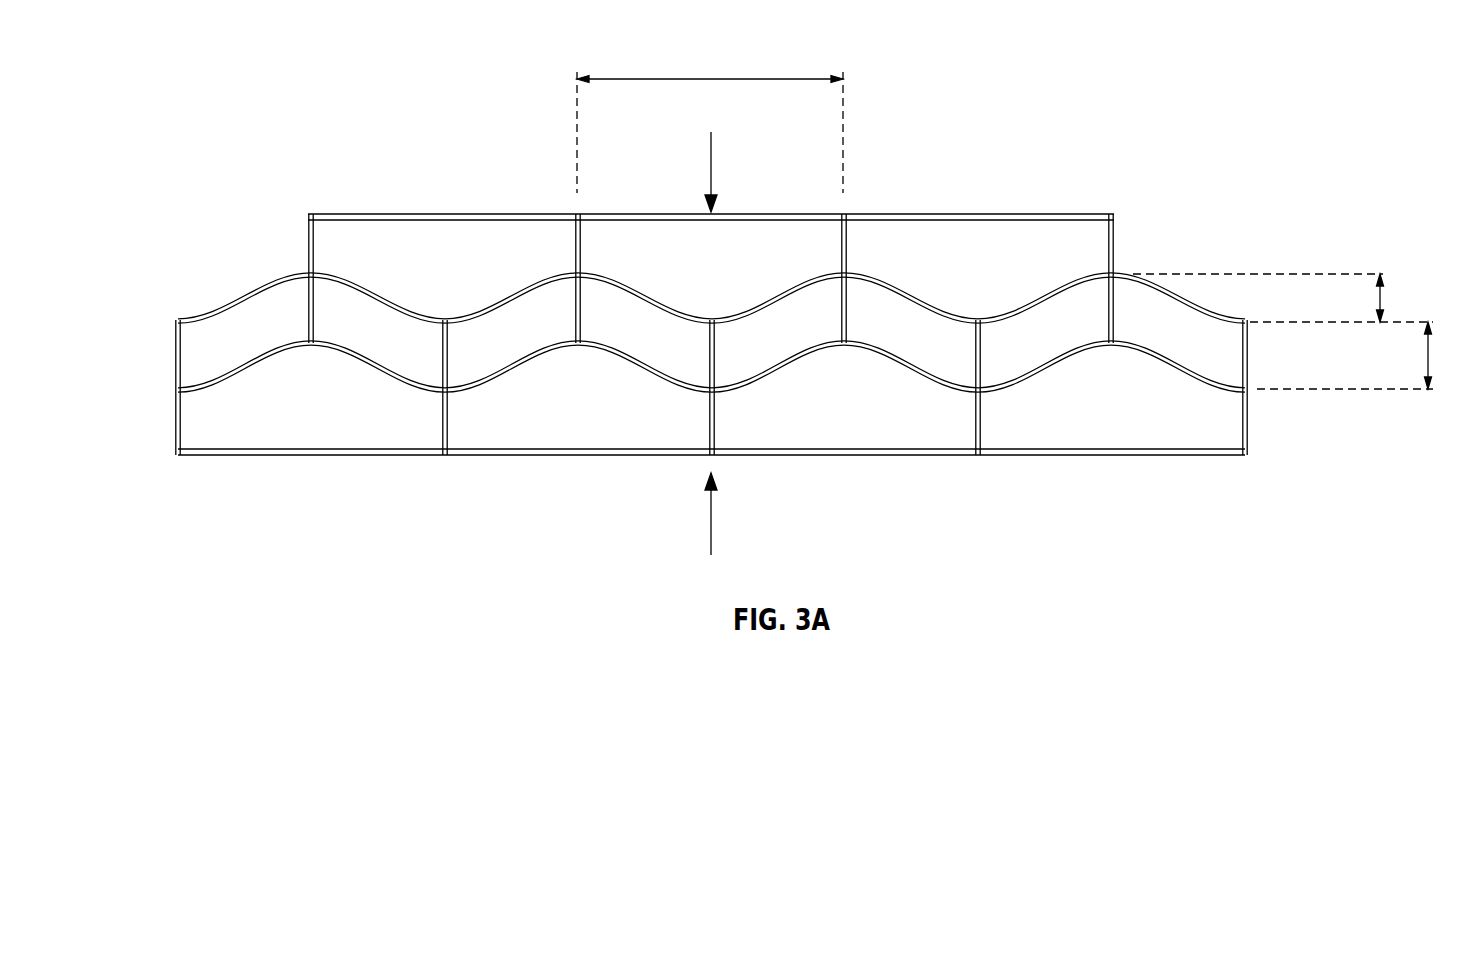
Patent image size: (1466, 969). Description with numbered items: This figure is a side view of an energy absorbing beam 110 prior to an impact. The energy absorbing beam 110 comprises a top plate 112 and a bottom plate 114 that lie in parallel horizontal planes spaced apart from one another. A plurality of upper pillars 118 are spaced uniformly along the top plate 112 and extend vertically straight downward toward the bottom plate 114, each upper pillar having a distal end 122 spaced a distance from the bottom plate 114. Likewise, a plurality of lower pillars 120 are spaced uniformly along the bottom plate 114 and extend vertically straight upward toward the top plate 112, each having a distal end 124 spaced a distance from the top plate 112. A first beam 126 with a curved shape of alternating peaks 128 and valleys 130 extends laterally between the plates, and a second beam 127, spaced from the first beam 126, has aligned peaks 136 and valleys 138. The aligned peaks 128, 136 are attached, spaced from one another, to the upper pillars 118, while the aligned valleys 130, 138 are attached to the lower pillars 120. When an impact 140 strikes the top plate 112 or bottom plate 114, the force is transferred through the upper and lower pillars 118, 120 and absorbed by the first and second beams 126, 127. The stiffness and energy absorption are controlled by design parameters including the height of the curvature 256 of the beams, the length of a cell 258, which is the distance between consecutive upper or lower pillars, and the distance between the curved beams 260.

The energy absorbing beam 110 is at (308, 499).
The top plate 112 is at (370, 213).
The bottom plate 114 is at (553, 456).
The upper pillars 118 is at (308, 237).
The lower pillars 120 is at (176, 437).
The distal end 122 is at (316, 310).
The distal end 124 is at (449, 355).
The first beam 126 is at (1202, 310).
The second beam 127 is at (1222, 385).
The peaks 128 is at (262, 289).
The valleys 130 is at (443, 319).
The peaks 136 is at (282, 346).
The valleys 138 is at (176, 403).
The impact 140 is at (713, 165).
The height of the curvature 256 is at (1384, 299).
The cell 258 is at (712, 78).
The distance between the curved beams 260 is at (1433, 357).